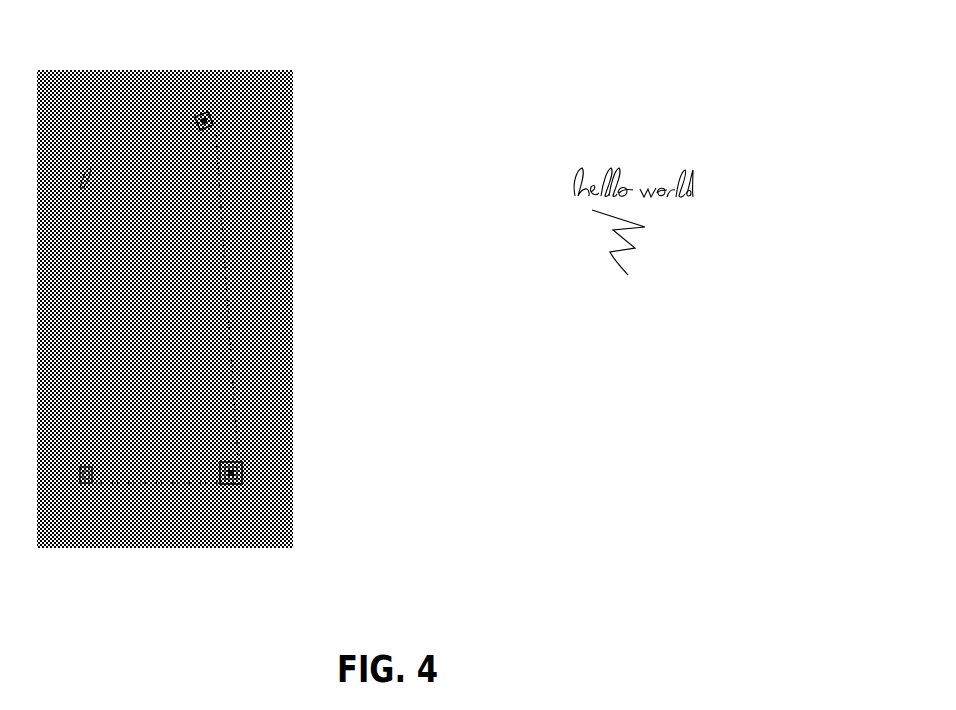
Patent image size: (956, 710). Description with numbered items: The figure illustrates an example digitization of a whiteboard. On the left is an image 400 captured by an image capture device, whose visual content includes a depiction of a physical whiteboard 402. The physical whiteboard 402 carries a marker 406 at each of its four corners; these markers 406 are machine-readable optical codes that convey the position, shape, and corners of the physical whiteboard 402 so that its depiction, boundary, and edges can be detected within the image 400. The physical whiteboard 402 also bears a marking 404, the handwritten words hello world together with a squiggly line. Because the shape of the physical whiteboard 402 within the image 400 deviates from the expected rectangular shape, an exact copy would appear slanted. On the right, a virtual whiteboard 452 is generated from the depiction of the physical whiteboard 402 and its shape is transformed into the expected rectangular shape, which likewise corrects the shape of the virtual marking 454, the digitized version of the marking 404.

The image 400 is at (170, 44).
The physical whiteboard 402 is at (217, 405).
The marking 404 is at (160, 244).
The marker 406 is at (214, 113).
The virtual whiteboard 452 is at (656, 36).
The virtual marking 454 is at (653, 245).